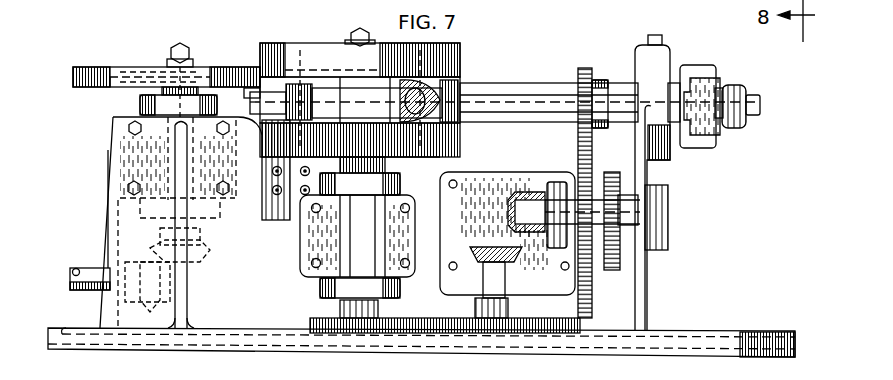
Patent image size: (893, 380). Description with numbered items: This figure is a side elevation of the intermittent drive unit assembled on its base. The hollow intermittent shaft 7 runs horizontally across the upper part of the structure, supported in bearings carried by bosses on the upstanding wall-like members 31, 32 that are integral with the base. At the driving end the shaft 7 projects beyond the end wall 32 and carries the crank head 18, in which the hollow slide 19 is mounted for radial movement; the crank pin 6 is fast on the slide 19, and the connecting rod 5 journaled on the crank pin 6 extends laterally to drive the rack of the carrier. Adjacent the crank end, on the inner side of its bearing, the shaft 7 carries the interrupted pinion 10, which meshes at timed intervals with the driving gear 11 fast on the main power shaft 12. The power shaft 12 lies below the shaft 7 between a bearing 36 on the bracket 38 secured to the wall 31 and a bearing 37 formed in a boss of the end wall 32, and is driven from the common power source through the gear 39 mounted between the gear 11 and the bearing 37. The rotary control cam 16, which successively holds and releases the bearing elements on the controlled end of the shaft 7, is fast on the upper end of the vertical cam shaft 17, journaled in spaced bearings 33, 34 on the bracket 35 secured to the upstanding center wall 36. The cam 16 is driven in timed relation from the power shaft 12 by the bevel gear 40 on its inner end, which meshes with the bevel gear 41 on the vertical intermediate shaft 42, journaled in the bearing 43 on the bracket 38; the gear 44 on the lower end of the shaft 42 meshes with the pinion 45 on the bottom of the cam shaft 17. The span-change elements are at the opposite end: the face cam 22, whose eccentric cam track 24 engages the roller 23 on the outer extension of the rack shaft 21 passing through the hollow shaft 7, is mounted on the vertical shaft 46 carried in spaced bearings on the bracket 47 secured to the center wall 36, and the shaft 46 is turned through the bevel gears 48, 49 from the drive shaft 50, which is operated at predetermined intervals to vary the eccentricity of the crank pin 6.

The connecting rod 5 is at (733, 132).
The crank pin 6 is at (758, 100).
The hollow shaft 7 is at (510, 86).
The pinion 10 is at (588, 72).
The driving gear 11 is at (588, 292).
The shaft 12 is at (598, 185).
The rotary cam 16 is at (303, 48).
The shaft 17 is at (345, 301).
The head 18 is at (690, 70).
The hollow slide 19 is at (720, 92).
The operating shaft 21 is at (480, 95).
The cam 22 is at (88, 68).
The roller 23 is at (252, 93).
The cam track 24 is at (110, 92).
The upstanding wall-like member 31 is at (535, 132).
The upstanding wall-like member 32 is at (650, 180).
The bearing 33 is at (400, 186).
The bearing 34 is at (403, 292).
The bracket 35 is at (308, 243).
The center wall 36 is at (112, 233).
The bearing 37 is at (653, 255).
The bracket 38 is at (484, 178).
The gear 39 is at (611, 270).
The bevel gear 40 is at (525, 192).
The bevel gear 41 is at (470, 248).
The intermediate shaft 42 is at (480, 300).
The bearing 43 is at (525, 285).
The gear 44 is at (529, 335).
The pinion 45 is at (390, 335).
The shaft 46 is at (134, 100).
The bracket 47 is at (226, 196).
The bevel gear 48 is at (202, 258).
The bevel gear 49 is at (150, 302).
The drive shaft 50 is at (80, 272).